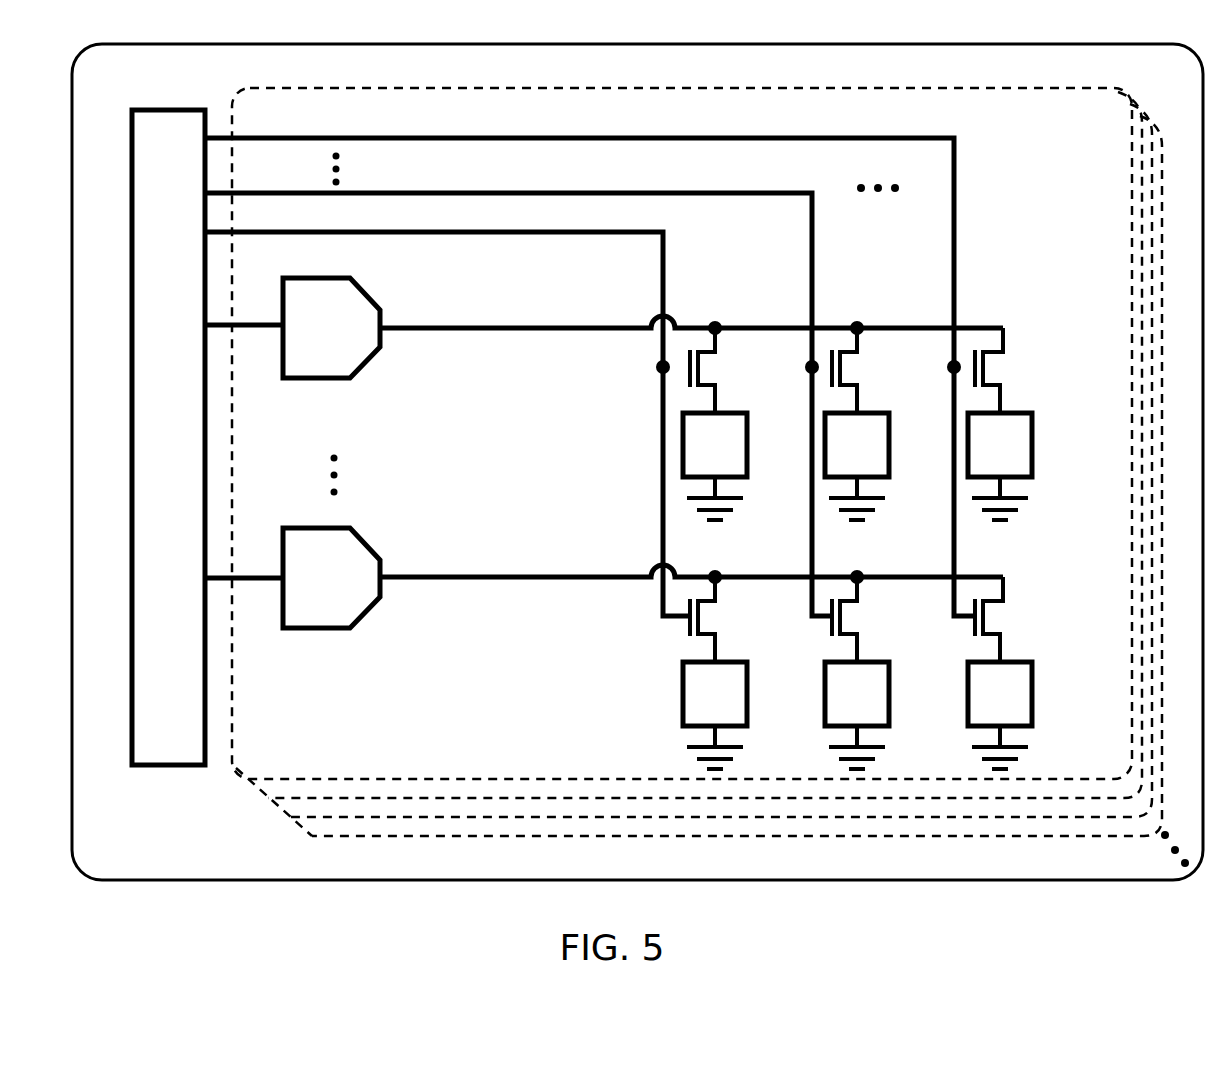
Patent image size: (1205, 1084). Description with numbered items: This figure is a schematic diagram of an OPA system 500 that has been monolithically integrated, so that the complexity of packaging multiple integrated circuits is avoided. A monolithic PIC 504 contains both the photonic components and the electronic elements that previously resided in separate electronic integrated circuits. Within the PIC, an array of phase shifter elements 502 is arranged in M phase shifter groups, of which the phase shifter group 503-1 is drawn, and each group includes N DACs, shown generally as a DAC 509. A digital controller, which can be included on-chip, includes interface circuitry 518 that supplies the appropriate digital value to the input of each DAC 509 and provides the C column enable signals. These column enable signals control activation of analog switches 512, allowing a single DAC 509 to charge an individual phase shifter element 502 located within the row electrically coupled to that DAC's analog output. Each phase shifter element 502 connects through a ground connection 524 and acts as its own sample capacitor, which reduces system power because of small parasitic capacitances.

The OPA system 500 is at (46, 98).
The monolithic PIC 504 is at (1192, 82).
The interface circuitry 518 is at (186, 158).
The phase shifter group 503-1 is at (1076, 133).
The DAC 509 is at (364, 370).
The analog switch 512 is at (1020, 342).
The phase shifter element 502 is at (1032, 427).
The ground connection 524 is at (1036, 733).